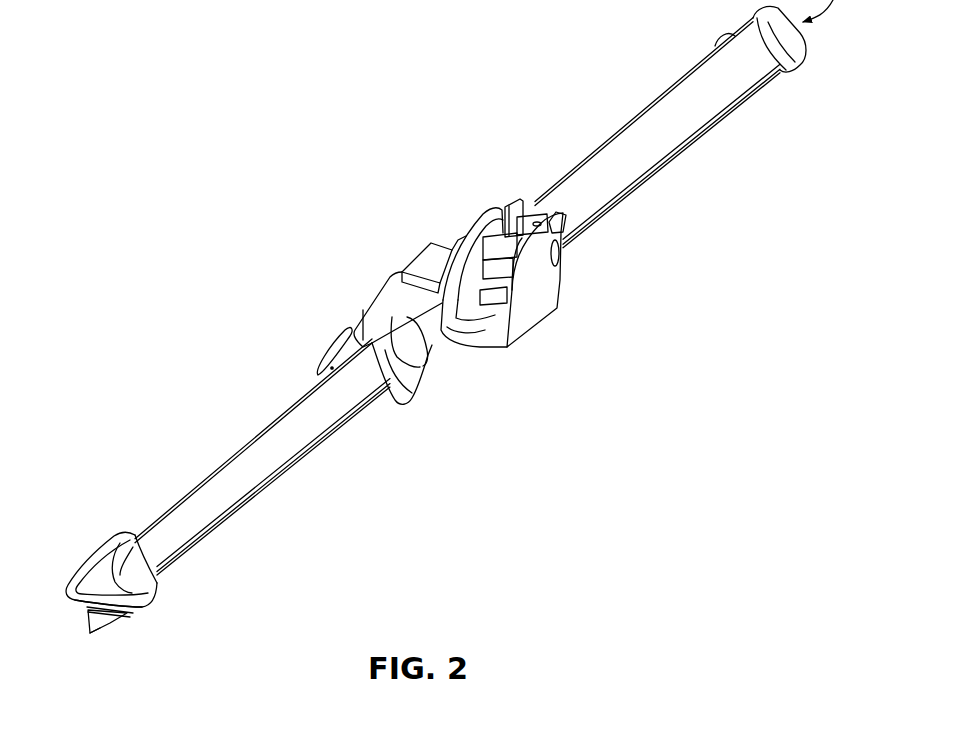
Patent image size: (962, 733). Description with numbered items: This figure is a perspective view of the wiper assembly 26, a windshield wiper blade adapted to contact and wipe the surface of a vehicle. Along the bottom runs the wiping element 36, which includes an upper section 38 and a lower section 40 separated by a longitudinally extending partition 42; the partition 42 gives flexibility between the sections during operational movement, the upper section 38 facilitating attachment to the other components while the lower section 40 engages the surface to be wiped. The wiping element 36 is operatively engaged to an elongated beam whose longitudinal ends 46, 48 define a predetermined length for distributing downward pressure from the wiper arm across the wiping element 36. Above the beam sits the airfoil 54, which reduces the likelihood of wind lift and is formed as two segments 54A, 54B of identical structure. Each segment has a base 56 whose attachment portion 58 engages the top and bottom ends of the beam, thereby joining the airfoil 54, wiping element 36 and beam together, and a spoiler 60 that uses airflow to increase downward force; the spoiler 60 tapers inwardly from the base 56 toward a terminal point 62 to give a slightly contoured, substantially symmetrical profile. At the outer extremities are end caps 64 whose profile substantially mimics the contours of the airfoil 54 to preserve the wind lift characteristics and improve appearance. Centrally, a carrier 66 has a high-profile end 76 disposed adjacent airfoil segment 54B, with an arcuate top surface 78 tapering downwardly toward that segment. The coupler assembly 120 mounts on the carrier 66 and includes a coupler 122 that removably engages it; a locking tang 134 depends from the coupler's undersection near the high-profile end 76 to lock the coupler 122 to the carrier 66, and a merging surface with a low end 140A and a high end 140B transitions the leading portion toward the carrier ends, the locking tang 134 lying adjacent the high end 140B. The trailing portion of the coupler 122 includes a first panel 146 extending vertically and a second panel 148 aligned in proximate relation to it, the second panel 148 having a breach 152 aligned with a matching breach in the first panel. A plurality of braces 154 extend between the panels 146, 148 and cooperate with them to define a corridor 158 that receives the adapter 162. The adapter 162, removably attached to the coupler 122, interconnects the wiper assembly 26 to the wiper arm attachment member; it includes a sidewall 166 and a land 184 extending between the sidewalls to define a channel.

The wiper assembly 26 is at (178, 278).
The wiping element 36 is at (80, 628).
The upper section 38 is at (110, 620).
The lower section 40 is at (100, 645).
The partition 42 is at (112, 633).
The longitudinal end 46 is at (147, 609).
The longitudinal end 48 is at (780, 80).
The airfoil 54 is at (145, 470).
The airfoil segment 54A is at (186, 458).
The airfoil segment 54B is at (617, 120).
The base 56 is at (722, 135).
The attachment portion 58 is at (674, 163).
The spoiler 60 is at (723, 90).
The terminal point 62 is at (671, 80).
The end caps 64 is at (80, 553).
The carrier 66 is at (332, 298).
The high-profile end 76 is at (318, 355).
The arcuate top surface 78 is at (421, 383).
The coupler assembly 120 is at (345, 183).
The coupler 122 is at (422, 240).
The locking tang 134 is at (398, 277).
The low end 140A is at (430, 265).
The high end 140B is at (458, 238).
The first panel 146 is at (491, 212).
The second panel 148 is at (532, 310).
The breach 152 is at (558, 252).
The braces 154 is at (482, 340).
The corridor 158 is at (483, 313).
The adapter 162 is at (508, 195).
The sidewall 166 is at (566, 217).
The land 184 is at (533, 205).